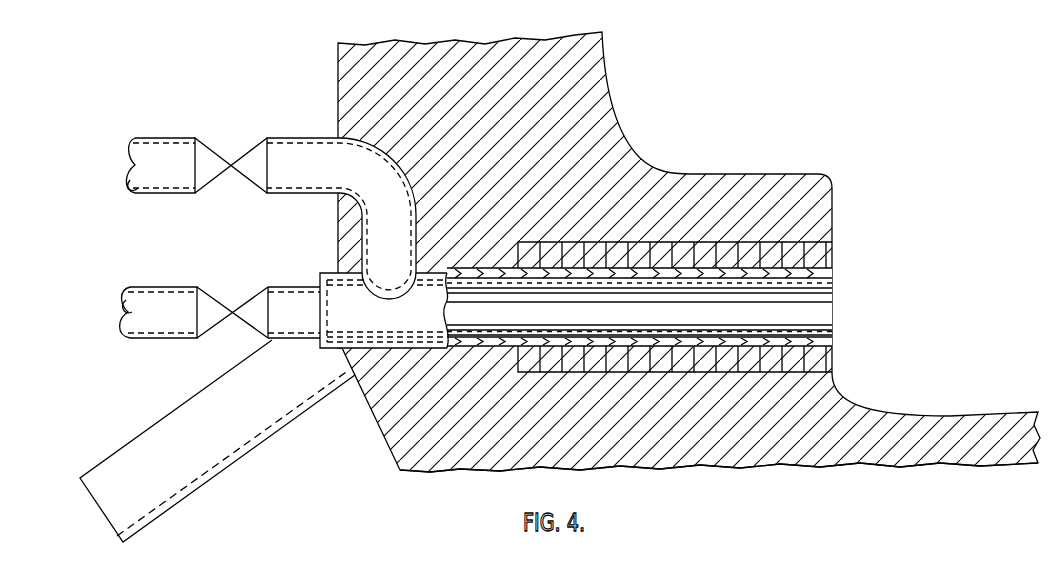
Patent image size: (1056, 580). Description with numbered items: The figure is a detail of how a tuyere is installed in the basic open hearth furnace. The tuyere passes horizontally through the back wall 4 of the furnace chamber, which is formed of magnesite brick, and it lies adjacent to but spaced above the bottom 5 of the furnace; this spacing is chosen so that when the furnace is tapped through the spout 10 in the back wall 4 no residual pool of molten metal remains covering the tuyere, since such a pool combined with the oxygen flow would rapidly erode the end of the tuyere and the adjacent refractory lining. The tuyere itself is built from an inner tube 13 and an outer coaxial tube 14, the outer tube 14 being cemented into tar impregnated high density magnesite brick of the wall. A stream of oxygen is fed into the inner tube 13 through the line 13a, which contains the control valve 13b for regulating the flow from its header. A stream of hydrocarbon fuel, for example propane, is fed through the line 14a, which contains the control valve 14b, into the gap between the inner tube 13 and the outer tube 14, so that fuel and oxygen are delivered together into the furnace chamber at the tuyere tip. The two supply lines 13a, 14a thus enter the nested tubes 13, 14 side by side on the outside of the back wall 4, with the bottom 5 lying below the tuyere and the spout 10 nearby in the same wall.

The back wall 4 is at (742, 182).
The bottom 5 is at (926, 465).
The spout 10 is at (198, 482).
The inner tube 13 is at (830, 285).
The line 13a is at (172, 340).
The control valve 13b is at (208, 303).
The outer coaxial tube 14 is at (830, 272).
The line 14a is at (157, 142).
The control valve 14b is at (206, 156).